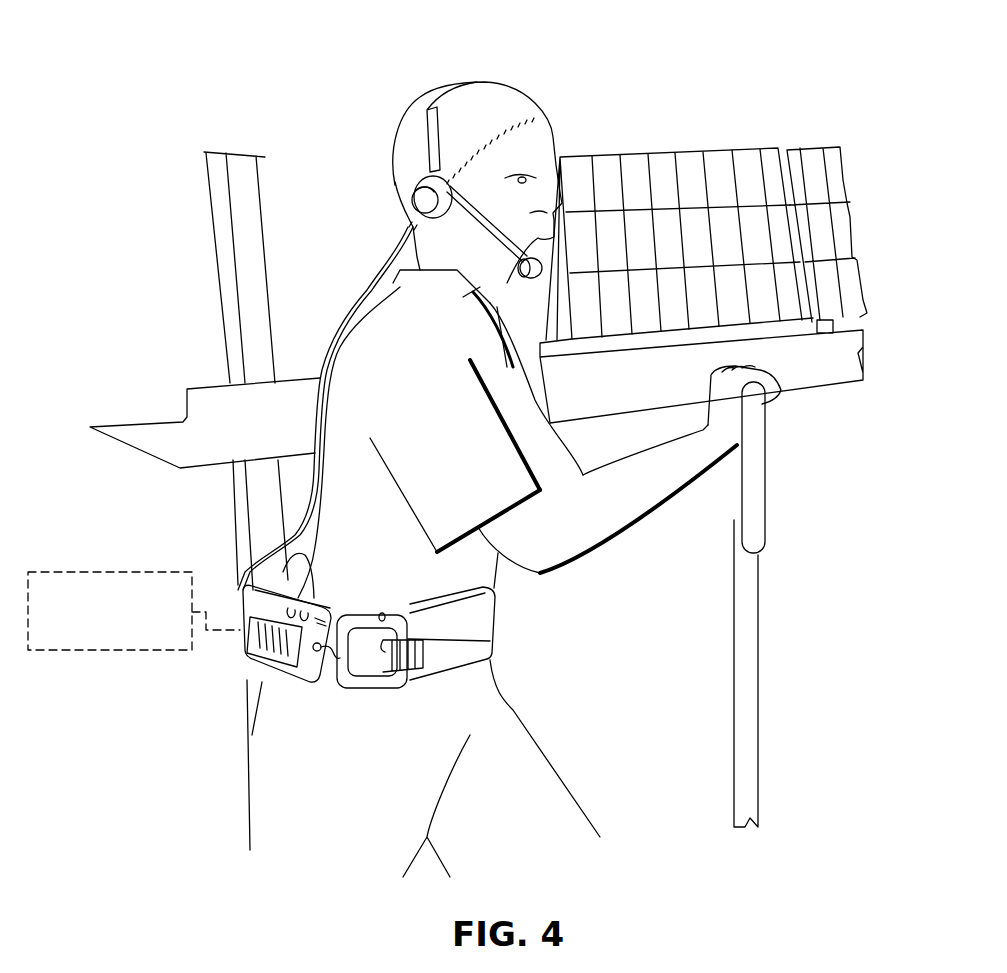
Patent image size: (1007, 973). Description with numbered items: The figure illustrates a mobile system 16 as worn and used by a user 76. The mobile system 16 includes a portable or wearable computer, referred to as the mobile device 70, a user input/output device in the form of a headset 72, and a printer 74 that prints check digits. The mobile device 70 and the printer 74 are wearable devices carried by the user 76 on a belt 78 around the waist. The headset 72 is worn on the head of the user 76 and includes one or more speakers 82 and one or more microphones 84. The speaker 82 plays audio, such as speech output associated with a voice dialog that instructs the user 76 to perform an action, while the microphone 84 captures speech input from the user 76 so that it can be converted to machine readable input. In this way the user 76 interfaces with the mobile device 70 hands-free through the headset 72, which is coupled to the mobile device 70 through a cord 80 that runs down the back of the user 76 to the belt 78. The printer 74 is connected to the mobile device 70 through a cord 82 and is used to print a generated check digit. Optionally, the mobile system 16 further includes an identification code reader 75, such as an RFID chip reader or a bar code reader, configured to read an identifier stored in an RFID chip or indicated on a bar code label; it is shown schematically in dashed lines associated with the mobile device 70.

The mobile system 16 is at (288, 46).
The headset 72 is at (471, 164).
The speaker 82 is at (415, 188).
The microphone 84 is at (517, 266).
The cord 80 is at (318, 425).
The user 76 is at (432, 407).
The mobile device 70 is at (253, 678).
The printer 74 is at (372, 690).
The belt 78 is at (497, 625).
The identification code reader 75 is at (128, 650).